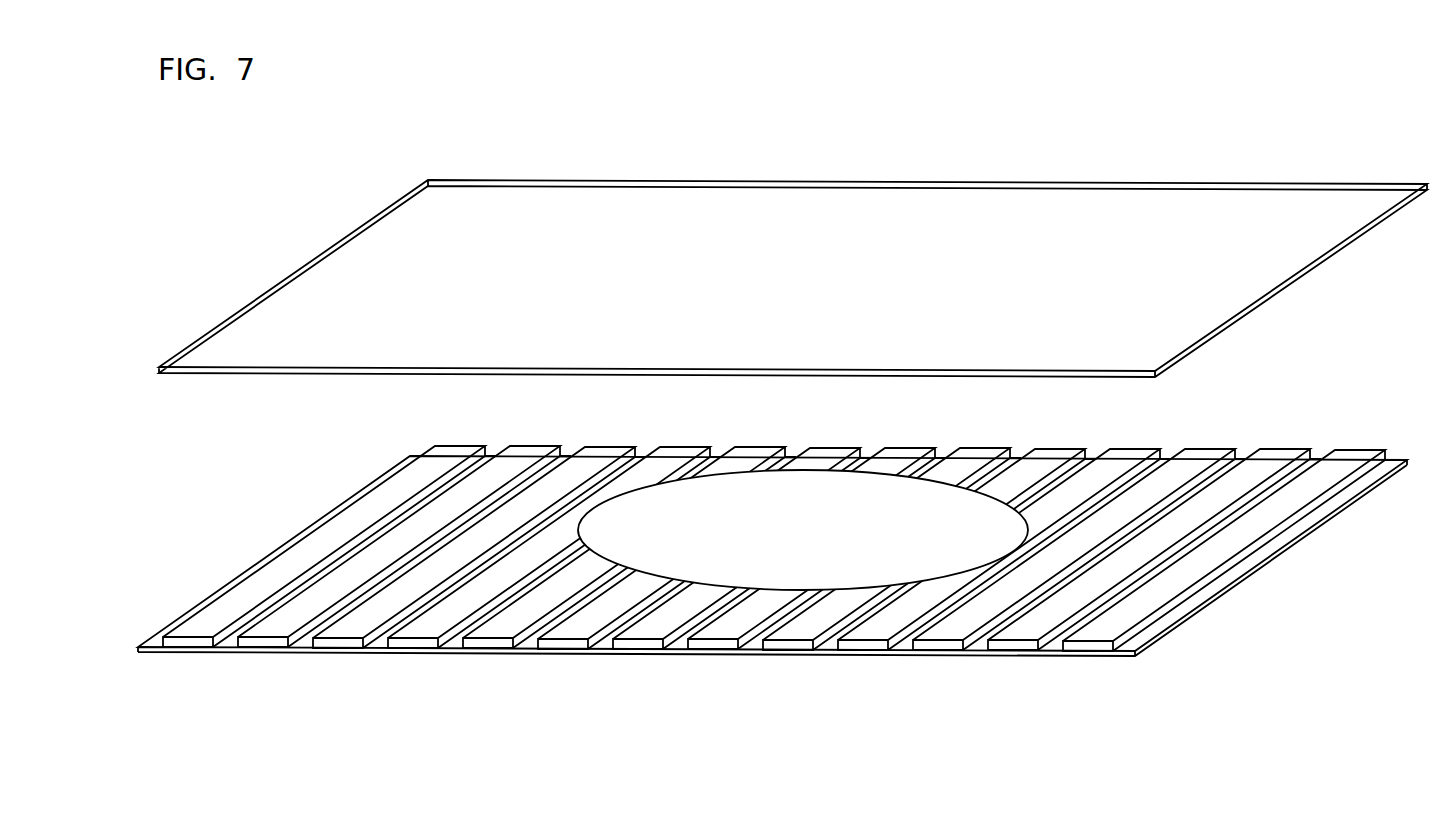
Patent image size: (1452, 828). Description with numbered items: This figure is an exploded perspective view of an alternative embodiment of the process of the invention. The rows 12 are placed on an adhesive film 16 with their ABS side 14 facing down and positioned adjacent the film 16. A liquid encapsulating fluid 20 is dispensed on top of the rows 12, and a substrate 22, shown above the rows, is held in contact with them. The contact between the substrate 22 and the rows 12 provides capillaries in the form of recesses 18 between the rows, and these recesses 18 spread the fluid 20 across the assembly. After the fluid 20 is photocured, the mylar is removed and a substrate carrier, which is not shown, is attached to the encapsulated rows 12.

The rows 12 is at (772, 608).
The ABS side 14 is at (700, 655).
The adhesive film 16 is at (1225, 597).
The recesses 18 is at (530, 640).
The liquid encapsulating fluid 20 is at (858, 568).
The substrate 22 is at (983, 220).